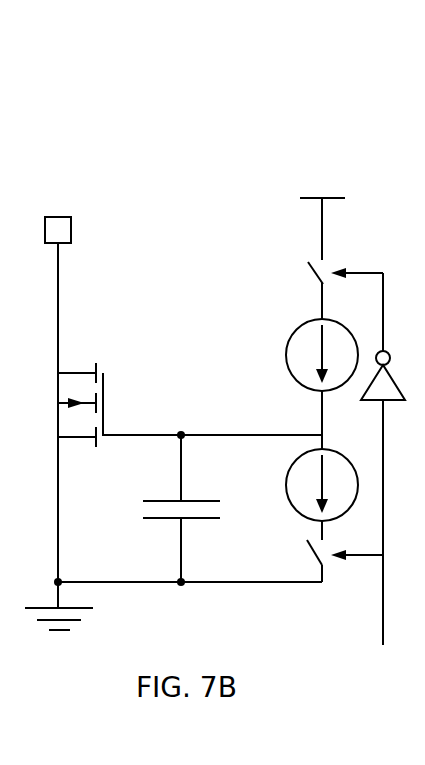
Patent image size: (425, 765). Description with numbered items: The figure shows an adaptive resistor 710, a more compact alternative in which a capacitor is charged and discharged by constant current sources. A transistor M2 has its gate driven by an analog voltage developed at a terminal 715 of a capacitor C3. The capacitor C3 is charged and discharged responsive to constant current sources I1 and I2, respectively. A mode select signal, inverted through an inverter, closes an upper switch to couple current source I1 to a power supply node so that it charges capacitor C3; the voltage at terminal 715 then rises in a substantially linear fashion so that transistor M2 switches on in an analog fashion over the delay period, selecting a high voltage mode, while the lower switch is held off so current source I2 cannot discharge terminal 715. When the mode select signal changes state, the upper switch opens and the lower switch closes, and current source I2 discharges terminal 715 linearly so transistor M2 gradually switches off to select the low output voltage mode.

The adaptive resistor 710 is at (229, 305).
The terminal 715 is at (181, 431).
The transistor M2 is at (99, 405).
The capacitor C3 is at (196, 508).
The constant current source I1 is at (311, 355).
The constant current source I2 is at (322, 475).